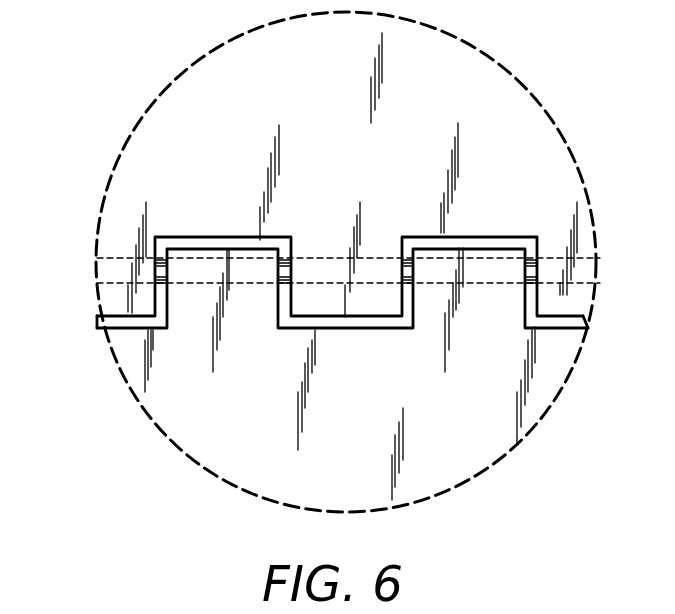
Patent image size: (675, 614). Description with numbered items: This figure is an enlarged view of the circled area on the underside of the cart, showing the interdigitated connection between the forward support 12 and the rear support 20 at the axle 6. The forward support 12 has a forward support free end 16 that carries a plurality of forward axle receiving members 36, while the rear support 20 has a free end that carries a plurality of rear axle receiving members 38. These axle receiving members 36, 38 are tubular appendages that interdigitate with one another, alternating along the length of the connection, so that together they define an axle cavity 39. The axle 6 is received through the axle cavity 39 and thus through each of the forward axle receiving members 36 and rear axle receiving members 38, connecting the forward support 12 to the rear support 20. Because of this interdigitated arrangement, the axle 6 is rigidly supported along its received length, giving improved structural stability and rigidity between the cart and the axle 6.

The forward support 12 is at (182, 147).
The forward support free end 16 is at (238, 194).
The rear support 20 is at (282, 459).
The forward axle receiving members 36 is at (120, 303).
The rear axle receiving members 38 is at (470, 255).
The axle cavity 39 is at (120, 270).
The axle 6 is at (535, 255).